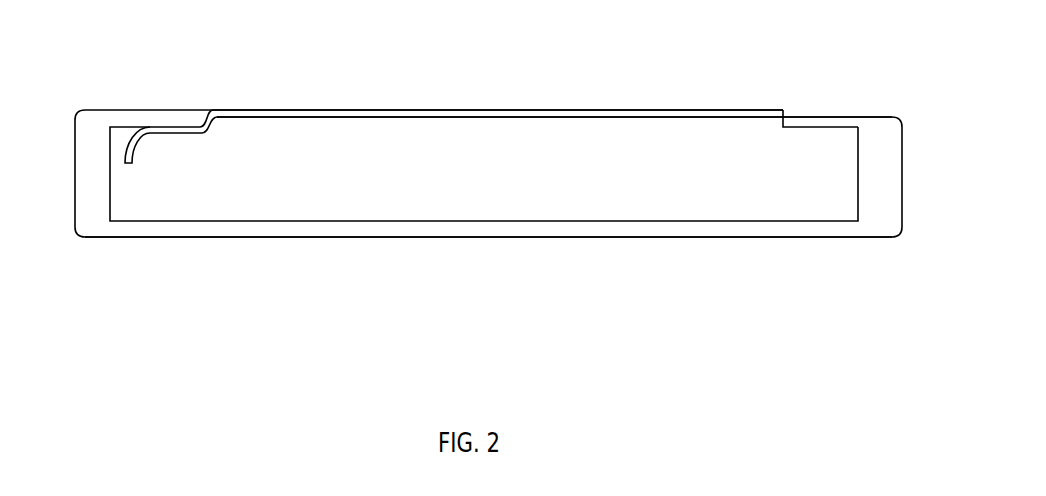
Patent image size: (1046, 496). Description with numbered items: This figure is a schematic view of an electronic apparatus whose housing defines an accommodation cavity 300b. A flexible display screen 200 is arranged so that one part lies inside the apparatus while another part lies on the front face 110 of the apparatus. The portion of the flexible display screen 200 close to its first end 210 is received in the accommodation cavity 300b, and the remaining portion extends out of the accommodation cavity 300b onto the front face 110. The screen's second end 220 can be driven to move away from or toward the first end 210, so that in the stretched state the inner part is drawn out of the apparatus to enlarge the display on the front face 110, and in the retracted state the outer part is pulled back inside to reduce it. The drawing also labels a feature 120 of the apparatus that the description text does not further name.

The front face 110 is at (289, 84).
The bottom surface of substrate 120 is at (504, 262).
The flexible display screen 200 is at (533, 115).
The first end 210 is at (136, 148).
The second end 220 is at (763, 118).
The accommodation cavity 300b is at (397, 187).